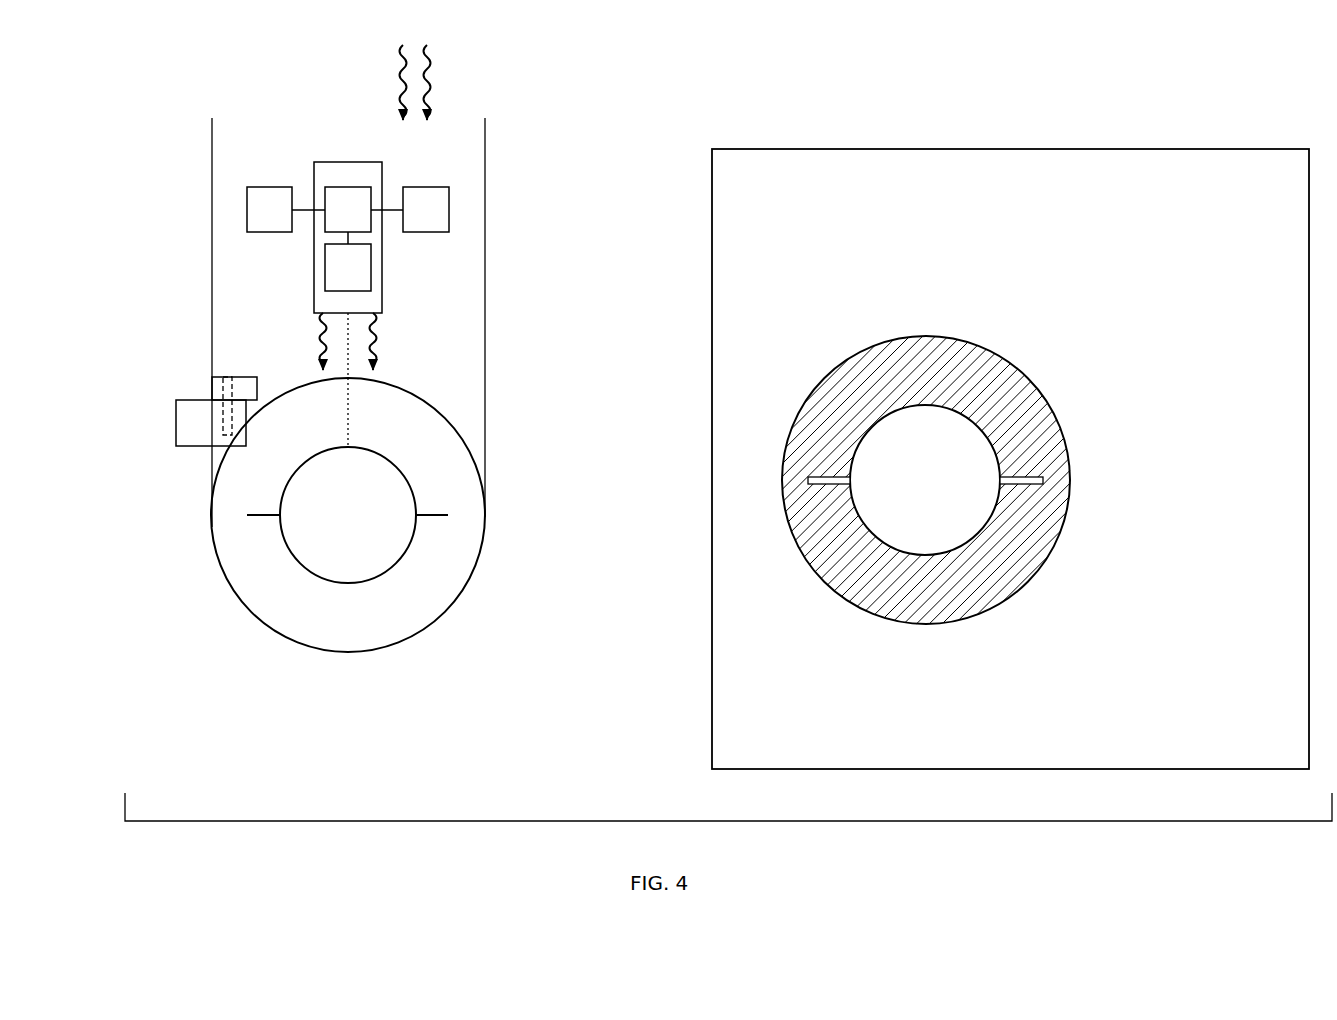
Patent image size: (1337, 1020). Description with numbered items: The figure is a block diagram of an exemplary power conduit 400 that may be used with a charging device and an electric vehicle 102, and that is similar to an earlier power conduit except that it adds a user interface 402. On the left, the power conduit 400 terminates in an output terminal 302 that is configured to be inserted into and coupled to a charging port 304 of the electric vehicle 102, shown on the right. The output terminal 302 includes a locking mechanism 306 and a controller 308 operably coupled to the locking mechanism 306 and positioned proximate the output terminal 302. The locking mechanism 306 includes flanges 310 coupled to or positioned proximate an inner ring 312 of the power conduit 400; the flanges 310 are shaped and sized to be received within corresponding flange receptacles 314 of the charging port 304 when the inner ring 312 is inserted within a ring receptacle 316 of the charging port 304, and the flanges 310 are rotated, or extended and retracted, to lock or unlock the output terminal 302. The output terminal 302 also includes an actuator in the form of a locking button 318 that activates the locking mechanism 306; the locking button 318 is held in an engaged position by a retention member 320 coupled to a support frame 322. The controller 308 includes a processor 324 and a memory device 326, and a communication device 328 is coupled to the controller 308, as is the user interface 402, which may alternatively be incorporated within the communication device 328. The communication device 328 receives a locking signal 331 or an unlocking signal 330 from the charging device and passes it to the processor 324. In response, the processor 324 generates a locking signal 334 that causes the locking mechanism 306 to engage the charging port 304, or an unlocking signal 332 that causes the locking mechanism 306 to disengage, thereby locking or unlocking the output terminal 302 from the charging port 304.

The power conduit 400 is at (612, 85).
The electric vehicle 102 is at (983, 149).
The output terminal 302 is at (525, 488).
The charging port 304 is at (1022, 330).
The locking mechanism 306 is at (246, 647).
The controller 308 is at (346, 162).
The flanges 310 is at (263, 517).
The inner ring 312 is at (348, 583).
The flange receptacles 314 is at (815, 487).
The ring receptacle 316 is at (927, 554).
The locking button 318 is at (176, 422).
The retention member 320 is at (222, 422).
The support frame 322 is at (212, 378).
The processor 324 is at (330, 187).
The memory device 326 is at (325, 268).
The communication device 328 is at (427, 187).
The unlocking signal 330 is at (431, 68).
The locking signal 331 is at (400, 50).
The unlocking signal 332 is at (378, 332).
The locking signal 334 is at (320, 332).
The user interface 402 is at (250, 187).